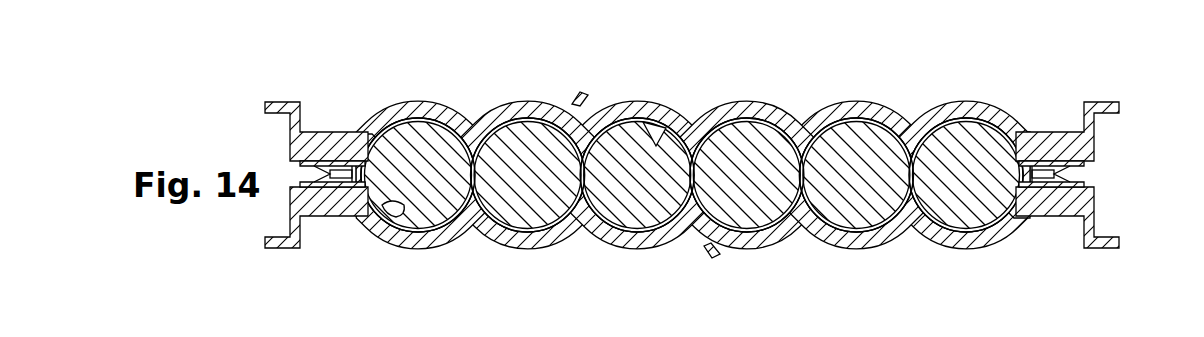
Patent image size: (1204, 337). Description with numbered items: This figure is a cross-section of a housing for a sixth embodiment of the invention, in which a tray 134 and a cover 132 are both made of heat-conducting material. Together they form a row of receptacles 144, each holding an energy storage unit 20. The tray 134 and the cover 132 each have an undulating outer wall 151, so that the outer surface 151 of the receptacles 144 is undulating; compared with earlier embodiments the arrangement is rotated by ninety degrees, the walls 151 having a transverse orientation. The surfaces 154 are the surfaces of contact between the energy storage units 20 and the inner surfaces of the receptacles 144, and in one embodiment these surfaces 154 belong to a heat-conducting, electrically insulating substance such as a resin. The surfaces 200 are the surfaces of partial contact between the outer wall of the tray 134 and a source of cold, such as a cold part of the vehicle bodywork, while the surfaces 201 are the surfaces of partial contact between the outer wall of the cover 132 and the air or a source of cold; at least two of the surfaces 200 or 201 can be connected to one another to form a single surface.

The energy storage unit 20 is at (421, 161).
The cover 132 is at (593, 92).
The tray 134 is at (710, 258).
The receptacle 144 is at (650, 125).
The undulating outer wall 151 is at (1010, 99).
The contact surfaces 154 is at (890, 100).
The partial contact surfaces of the tray 200 is at (291, 248).
The partial contact surfaces of the cover 201 is at (277, 102).